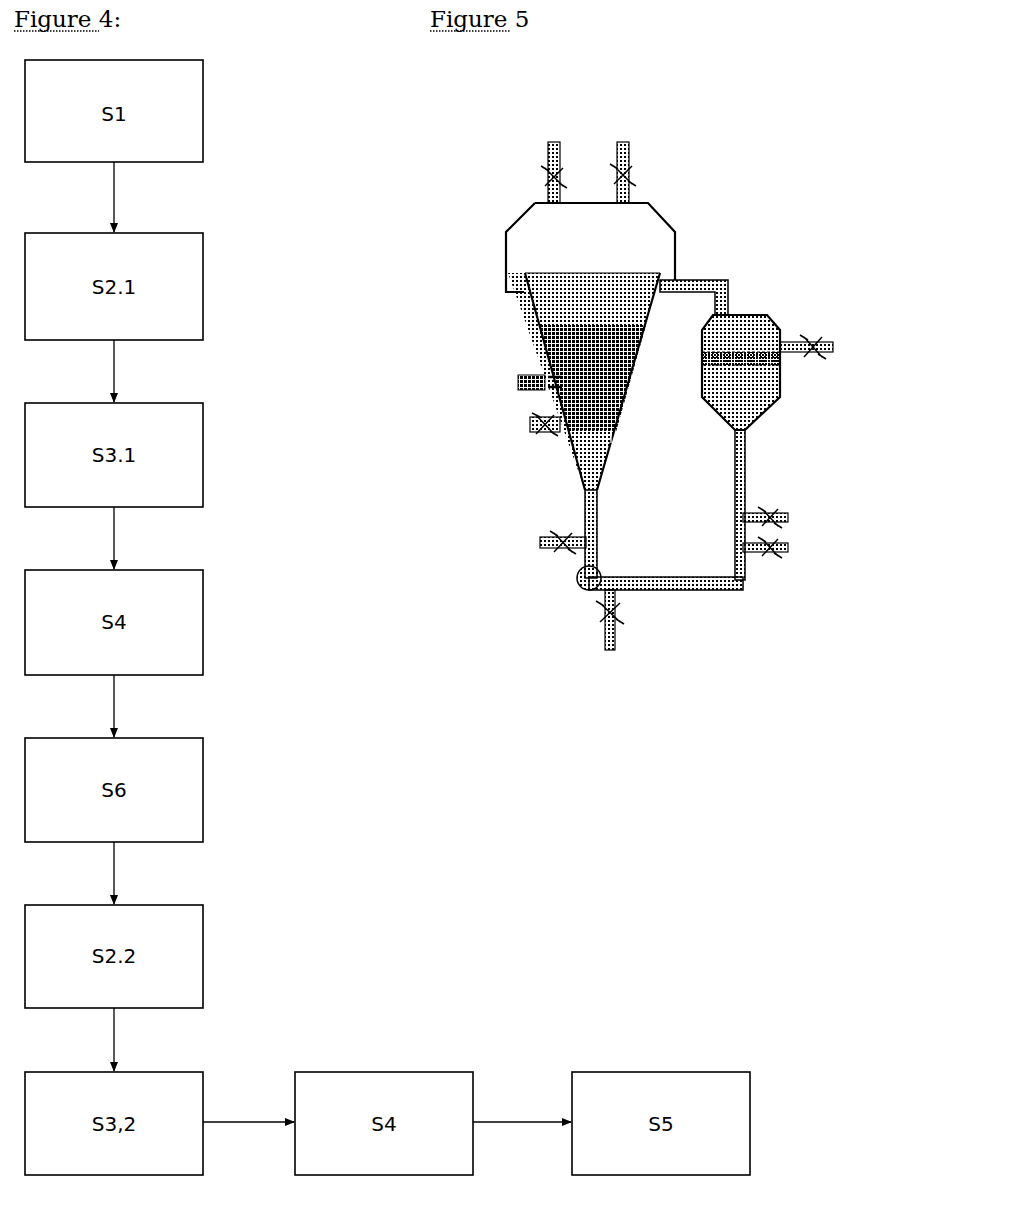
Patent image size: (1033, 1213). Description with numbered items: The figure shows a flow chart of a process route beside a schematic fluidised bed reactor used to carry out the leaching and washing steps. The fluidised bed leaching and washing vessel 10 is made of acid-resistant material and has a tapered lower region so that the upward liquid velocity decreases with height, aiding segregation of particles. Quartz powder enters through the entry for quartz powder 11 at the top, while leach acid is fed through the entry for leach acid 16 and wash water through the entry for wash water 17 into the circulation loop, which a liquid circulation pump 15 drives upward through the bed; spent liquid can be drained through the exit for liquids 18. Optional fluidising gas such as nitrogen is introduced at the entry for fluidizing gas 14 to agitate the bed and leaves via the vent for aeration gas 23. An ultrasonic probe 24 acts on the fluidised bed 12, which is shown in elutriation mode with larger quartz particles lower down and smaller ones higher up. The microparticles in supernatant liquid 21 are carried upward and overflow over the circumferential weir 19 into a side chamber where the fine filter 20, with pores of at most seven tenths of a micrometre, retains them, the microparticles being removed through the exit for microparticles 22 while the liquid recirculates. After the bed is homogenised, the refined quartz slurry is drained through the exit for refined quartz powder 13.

The fluidised bed leaching and washing vessel 10 is at (667, 213).
The entry for quartz powder to be refined 11 is at (562, 160).
The fluidised bed in elutriation mode 12 is at (541, 313).
The exit for refined quartz powder 13 is at (541, 443).
The entry for optional fluidizing gas 14 is at (538, 538).
The liquid circulation pump 15 is at (566, 584).
The entry for leach acid 16 is at (790, 541).
The entry for wash water 17 is at (786, 509).
The exit for liquids 18 is at (626, 616).
The circumferential weir 19 is at (664, 283).
The fine filter for refractory powders 20 is at (742, 350).
The microparticles in supernatant liquid 21 is at (628, 275).
The exit for microparticles 22 is at (838, 342).
The vent for aeration gas 23 is at (634, 150).
The ultrasonic probe 24 is at (512, 383).